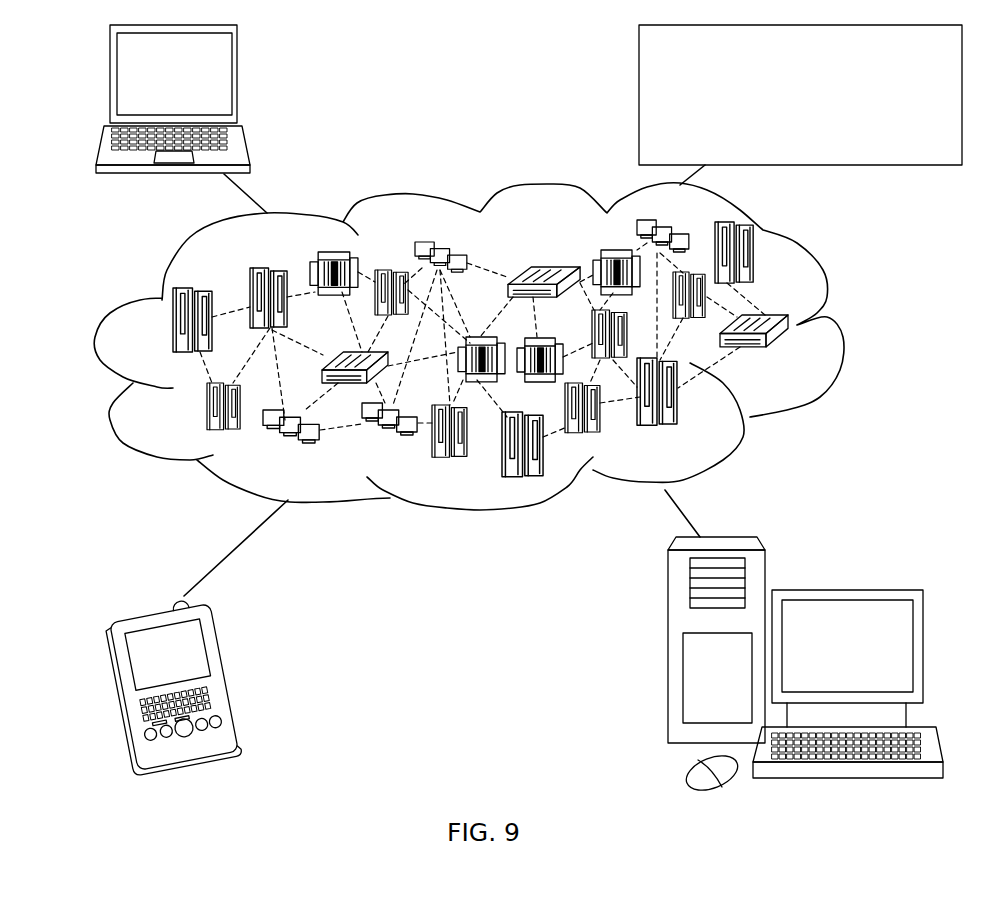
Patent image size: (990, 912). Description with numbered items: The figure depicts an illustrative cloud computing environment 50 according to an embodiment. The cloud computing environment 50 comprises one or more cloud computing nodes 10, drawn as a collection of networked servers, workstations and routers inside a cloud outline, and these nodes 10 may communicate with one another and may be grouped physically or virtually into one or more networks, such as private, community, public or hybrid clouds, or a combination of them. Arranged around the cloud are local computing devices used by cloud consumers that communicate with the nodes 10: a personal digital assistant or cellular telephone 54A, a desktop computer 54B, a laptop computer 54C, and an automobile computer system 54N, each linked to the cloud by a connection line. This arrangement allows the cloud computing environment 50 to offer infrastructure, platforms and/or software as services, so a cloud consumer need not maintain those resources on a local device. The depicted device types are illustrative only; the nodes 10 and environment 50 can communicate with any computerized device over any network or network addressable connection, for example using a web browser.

The cloud computing node 10 is at (790, 355).
The cloud computing environment 50 is at (838, 326).
The personal digital assistant or cellular telephone 54A is at (232, 676).
The desktop computer 54B is at (845, 590).
The laptop computer 54C is at (237, 80).
The automobile computer system 54N is at (639, 96).